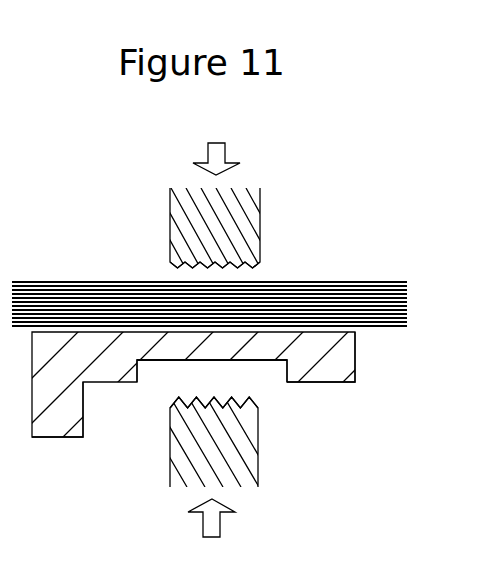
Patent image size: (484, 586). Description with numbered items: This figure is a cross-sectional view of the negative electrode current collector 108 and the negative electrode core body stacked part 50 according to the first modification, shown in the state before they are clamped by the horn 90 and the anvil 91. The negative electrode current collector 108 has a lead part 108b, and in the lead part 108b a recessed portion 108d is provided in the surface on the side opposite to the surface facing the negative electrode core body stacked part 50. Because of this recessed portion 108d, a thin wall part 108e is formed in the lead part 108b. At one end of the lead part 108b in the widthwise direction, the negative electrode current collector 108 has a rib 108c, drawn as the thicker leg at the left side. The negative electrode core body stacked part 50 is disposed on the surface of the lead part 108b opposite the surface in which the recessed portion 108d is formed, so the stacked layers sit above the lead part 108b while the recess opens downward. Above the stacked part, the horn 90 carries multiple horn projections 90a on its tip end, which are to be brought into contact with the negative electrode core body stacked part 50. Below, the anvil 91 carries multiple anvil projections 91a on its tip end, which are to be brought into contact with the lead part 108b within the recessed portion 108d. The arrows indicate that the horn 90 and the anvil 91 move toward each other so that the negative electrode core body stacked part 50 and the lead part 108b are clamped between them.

The horn 90 is at (262, 213).
The horn projections 90a is at (170, 263).
The negative electrode core body stacked part 50 is at (391, 282).
The negative electrode current collector 108 is at (99, 392).
The lead part 108b is at (347, 355).
The rib 108c is at (57, 418).
The recessed portion 108d is at (152, 363).
The thin wall part 108e is at (253, 349).
The anvil 91 is at (262, 482).
The anvil projections 91a is at (258, 401).